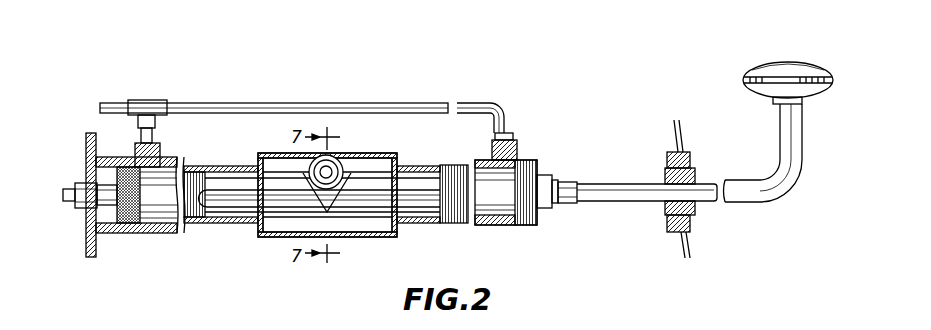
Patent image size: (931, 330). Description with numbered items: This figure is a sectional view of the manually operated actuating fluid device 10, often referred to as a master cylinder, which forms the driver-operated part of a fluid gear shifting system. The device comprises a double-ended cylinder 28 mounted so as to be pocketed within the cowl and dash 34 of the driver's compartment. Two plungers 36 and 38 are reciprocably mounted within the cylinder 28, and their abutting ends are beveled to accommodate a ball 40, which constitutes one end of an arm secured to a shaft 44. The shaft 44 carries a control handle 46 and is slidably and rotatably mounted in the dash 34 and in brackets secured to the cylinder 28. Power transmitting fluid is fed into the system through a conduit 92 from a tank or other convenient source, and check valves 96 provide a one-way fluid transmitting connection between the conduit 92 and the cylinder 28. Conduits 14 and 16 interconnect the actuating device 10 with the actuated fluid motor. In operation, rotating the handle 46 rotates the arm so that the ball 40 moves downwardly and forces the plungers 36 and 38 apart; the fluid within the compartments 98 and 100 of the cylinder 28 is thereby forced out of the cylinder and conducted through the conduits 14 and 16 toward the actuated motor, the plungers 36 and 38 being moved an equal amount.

The manually operated actuating fluid device 10 is at (252, 237).
The conduit 14 is at (577, 203).
The conduit 16 is at (72, 205).
The double-ended cylinder 28 is at (417, 166).
The dash 34 is at (683, 128).
The plunger 36 is at (233, 204).
The plunger 38 is at (427, 213).
The ball 40 is at (340, 160).
The shaft 44 is at (627, 185).
The control handle 46 is at (768, 72).
The conduit 92 is at (305, 108).
The check valves 96 is at (160, 160).
The compartment 98 is at (160, 205).
The compartment 100 is at (493, 203).